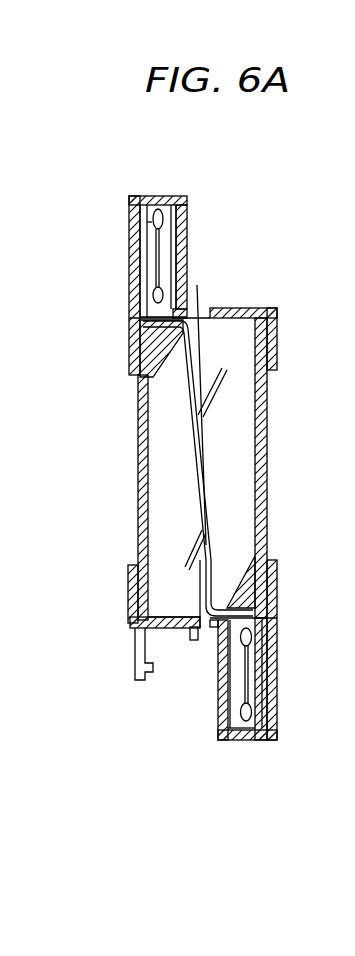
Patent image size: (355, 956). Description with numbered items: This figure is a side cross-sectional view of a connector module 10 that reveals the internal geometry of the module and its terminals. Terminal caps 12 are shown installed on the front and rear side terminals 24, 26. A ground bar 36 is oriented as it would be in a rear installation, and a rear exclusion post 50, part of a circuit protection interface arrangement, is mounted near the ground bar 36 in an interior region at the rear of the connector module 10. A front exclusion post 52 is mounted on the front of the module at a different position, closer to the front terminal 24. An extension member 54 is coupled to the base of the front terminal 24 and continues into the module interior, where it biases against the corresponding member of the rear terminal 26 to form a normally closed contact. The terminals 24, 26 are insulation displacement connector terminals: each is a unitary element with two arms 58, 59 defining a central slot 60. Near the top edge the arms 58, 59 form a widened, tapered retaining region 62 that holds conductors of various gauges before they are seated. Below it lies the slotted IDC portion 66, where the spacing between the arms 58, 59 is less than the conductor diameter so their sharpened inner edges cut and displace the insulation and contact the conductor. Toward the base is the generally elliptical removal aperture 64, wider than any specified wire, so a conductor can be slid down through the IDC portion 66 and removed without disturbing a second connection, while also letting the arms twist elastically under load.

The connector module 10 is at (140, 525).
The terminal caps 12 is at (129, 245).
The front terminal 24 is at (147, 328).
The rear terminal 26 is at (258, 633).
The ground bar 36 is at (217, 543).
The rear exclusion post 50 is at (190, 633).
The front exclusion post 52 is at (198, 288).
The extension member 54 is at (187, 385).
The terminal arm 58 is at (147, 225).
The terminal arm 59 is at (165, 237).
The slot 60 is at (185, 215).
The retaining region 62 is at (158, 208).
The removal aperture 64 is at (157, 295).
The IDC portion 66 is at (157, 268).